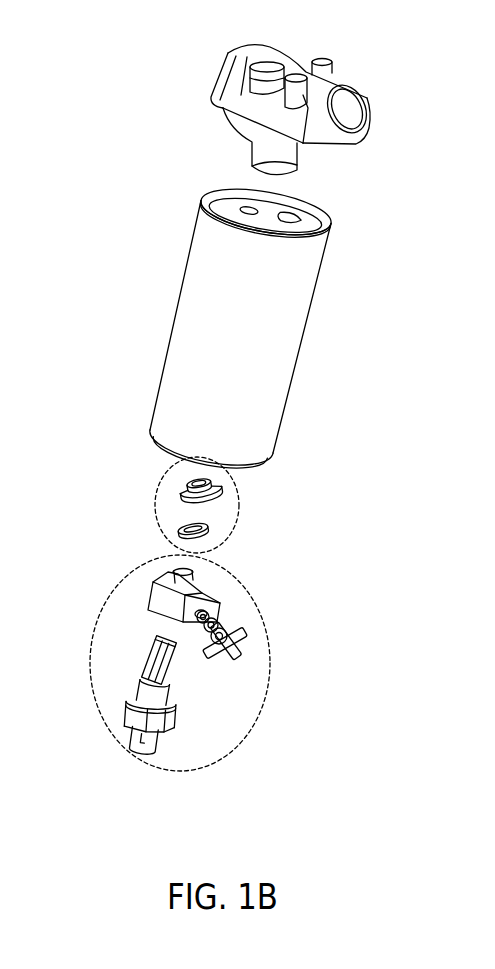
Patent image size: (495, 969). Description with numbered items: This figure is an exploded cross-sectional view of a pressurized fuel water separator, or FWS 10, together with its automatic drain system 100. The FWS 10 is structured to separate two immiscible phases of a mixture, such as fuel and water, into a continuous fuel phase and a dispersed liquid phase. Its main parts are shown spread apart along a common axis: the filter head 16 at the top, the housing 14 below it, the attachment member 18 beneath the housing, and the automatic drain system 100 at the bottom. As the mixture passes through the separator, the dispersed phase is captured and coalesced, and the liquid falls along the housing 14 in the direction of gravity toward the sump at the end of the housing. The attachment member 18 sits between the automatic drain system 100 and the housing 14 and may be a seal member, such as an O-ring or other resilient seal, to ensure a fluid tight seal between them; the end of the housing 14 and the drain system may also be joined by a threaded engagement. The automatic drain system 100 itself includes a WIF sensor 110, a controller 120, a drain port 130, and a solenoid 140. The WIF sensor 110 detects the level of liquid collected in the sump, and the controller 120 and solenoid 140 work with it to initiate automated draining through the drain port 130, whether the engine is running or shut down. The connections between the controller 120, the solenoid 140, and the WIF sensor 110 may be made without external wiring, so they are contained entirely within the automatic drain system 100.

The fuel water separator 10 is at (192, 83).
The filter head 16 is at (381, 123).
The housing 14 is at (327, 324).
The attachment member 18 is at (251, 489).
The automatic drain system 100 is at (112, 543).
The solenoid 140 is at (209, 583).
The drain port 130 is at (260, 656).
The WIF sensor 110 is at (178, 675).
The controller 120 is at (190, 738).